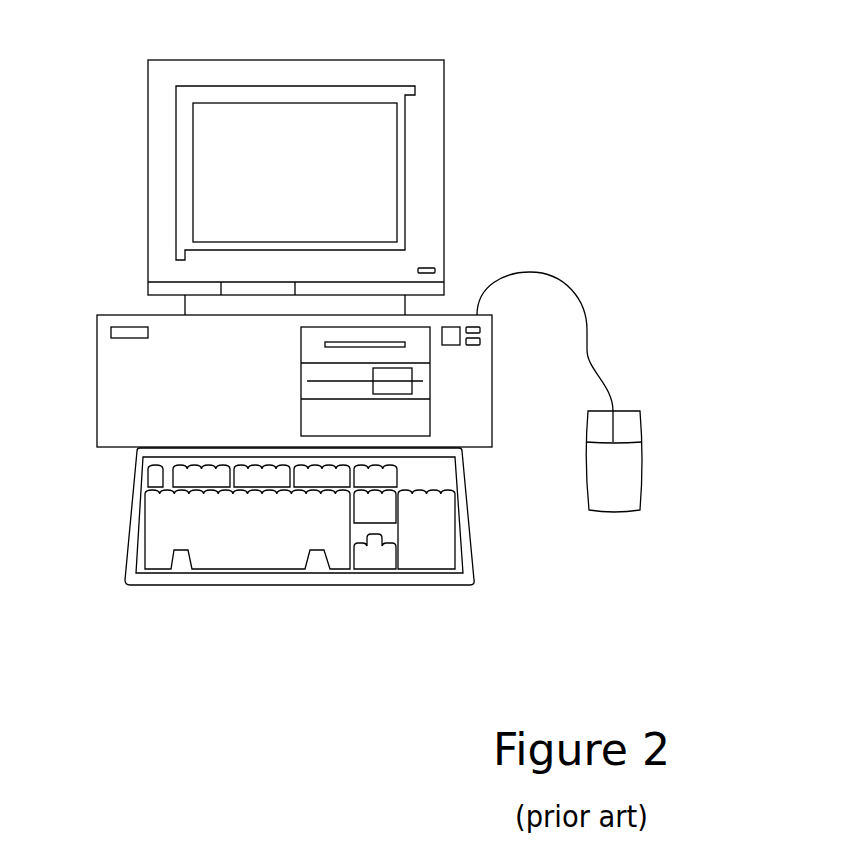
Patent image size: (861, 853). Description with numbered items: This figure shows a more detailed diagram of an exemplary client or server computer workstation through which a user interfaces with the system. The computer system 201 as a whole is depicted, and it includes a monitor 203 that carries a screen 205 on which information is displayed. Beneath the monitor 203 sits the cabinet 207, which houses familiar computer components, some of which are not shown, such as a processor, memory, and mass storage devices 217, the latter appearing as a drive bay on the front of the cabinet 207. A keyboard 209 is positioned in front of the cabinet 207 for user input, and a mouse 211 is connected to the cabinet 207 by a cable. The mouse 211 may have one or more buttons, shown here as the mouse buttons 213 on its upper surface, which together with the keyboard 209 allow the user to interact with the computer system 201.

The computer system 201 is at (463, 37).
The monitor 203 is at (443, 147).
The screen 205 is at (212, 162).
The cabinet 207 is at (127, 318).
The keyboard 209 is at (175, 585).
The mouse 211 is at (613, 498).
The mouse buttons 213 is at (627, 430).
The mass storage devices 217 is at (420, 330).